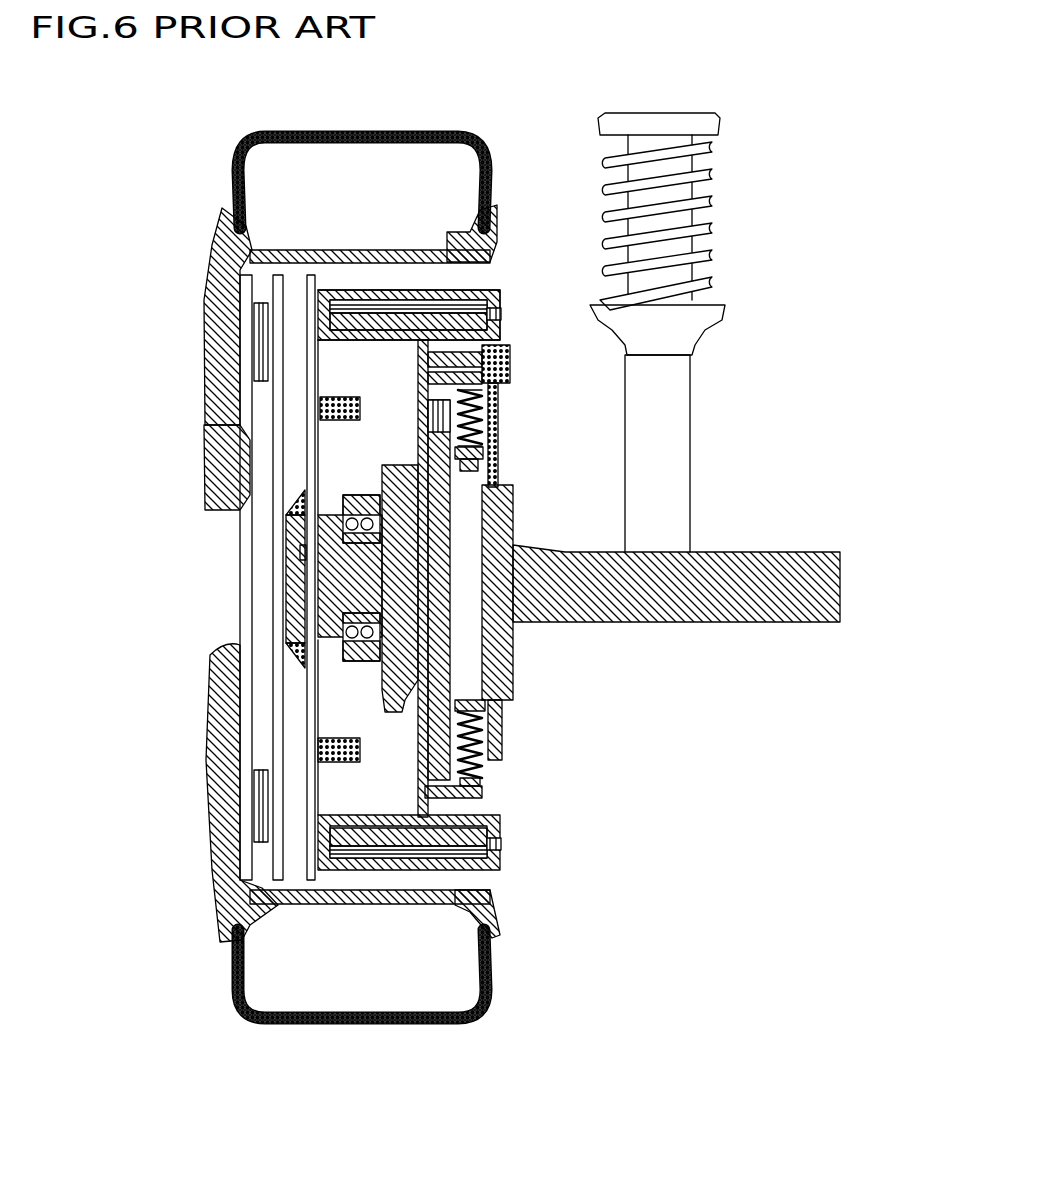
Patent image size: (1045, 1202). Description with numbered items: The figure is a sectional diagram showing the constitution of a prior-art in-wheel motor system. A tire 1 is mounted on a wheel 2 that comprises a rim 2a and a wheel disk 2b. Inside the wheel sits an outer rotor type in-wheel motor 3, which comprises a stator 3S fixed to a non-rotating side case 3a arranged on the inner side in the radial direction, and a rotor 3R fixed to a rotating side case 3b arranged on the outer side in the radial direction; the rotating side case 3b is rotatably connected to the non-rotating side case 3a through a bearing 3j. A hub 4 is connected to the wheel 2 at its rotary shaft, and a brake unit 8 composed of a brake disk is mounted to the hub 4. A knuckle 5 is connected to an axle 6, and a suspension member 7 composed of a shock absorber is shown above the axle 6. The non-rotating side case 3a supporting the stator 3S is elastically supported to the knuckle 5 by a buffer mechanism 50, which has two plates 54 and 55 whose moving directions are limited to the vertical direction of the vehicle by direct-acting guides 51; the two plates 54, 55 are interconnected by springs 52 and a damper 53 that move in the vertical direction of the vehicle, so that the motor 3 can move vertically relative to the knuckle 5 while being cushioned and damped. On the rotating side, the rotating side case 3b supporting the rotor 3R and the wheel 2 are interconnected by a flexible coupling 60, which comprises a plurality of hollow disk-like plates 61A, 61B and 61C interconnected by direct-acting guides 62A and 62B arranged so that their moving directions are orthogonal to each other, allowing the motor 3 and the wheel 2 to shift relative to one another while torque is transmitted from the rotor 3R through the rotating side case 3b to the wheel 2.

The tire 1 is at (432, 132).
The wheel 2 is at (297, 532).
The rim 2a is at (228, 212).
The wheel disk 2b is at (208, 485).
The in-wheel motor 3 is at (452, 526).
The stator 3S is at (356, 322).
The rotor 3R is at (420, 305).
The non-rotating side case 3a is at (500, 333).
The rotating side case 3b is at (495, 298).
The bearing 3j is at (503, 314).
The hub 4 is at (358, 585).
The knuckle 5 is at (400, 710).
The buffer mechanism 50 is at (496, 580).
The direct-acting guide 51 is at (422, 400).
The spring 52 is at (493, 442).
The damper 53 is at (506, 535).
The plate 54 is at (430, 430).
The plate 55 is at (458, 462).
The axle 6 is at (742, 560).
The flexible coupling 60 is at (247, 551).
The hollow disk-like plate 61A is at (315, 686).
The hollow disk-like plate 61B is at (280, 418).
The hollow disk-like plate 61C is at (245, 300).
The direct-acting guide 62A is at (290, 583).
The direct-acting guide 62B is at (247, 335).
The suspension member 7 is at (688, 255).
The brake unit 8 is at (333, 752).